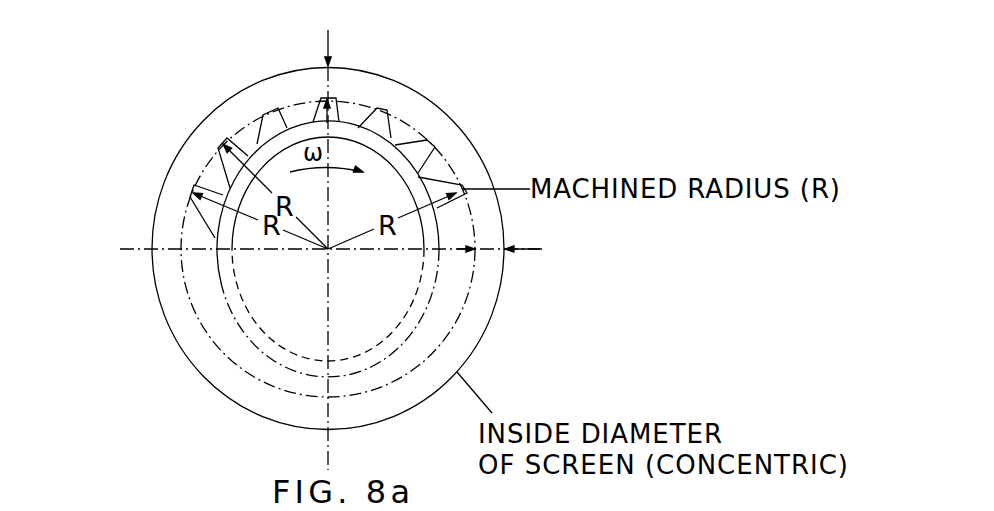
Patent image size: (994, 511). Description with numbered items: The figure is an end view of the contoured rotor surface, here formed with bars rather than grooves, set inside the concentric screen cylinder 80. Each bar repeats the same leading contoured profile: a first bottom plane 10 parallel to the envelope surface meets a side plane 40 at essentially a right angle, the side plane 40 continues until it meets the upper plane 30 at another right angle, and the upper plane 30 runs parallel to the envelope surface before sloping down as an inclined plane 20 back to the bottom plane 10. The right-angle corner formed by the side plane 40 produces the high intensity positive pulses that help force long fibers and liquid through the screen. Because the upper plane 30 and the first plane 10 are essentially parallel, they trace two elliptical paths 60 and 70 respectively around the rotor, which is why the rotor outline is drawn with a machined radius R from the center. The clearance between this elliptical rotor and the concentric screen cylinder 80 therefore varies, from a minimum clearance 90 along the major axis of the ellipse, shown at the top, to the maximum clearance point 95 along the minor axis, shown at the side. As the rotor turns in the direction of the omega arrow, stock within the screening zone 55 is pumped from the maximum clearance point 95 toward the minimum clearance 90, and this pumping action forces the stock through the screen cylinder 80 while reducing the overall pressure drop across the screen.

The first bottom plane 10 is at (386, 140).
The inclined plane 20 is at (416, 135).
The upper plane 30 is at (432, 141).
The side plane 40 is at (432, 154).
The screening zone 55 is at (245, 347).
The elliptical path of the upper plane 60 is at (183, 214).
The elliptical path of the first plane 70 is at (222, 288).
The screen cylinder 80 is at (415, 408).
The minimum clearance 90 is at (330, 61).
The maximum clearance point 95 is at (520, 249).